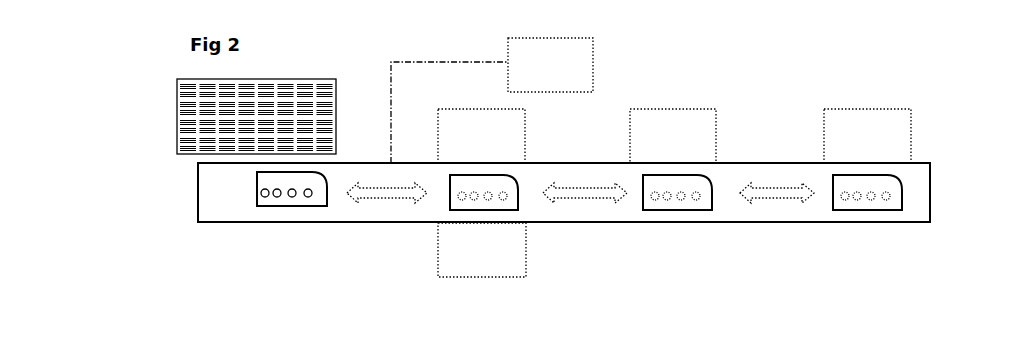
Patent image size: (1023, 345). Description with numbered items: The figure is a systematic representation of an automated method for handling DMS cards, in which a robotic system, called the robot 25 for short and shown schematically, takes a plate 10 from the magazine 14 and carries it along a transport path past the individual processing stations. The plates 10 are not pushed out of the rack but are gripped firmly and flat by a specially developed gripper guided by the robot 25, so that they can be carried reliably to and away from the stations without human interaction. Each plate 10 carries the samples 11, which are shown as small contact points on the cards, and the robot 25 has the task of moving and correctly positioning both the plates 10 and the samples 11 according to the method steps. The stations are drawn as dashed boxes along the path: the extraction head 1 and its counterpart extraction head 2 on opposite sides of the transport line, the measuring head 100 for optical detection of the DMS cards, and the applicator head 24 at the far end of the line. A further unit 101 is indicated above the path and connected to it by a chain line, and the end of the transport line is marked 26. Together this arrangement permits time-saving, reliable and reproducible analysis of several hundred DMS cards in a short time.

The extraction head 1 is at (488, 144).
The counterpart extraction head 2 is at (488, 257).
The plate 10 is at (338, 101).
The sample 11 is at (265, 207).
The magazine 14 is at (258, 80).
The applicator head 24 is at (878, 144).
The robot 25 is at (227, 179).
The conveyor end 26 is at (913, 183).
The measuring head 100 is at (689, 144).
The control unit 101 is at (568, 75).